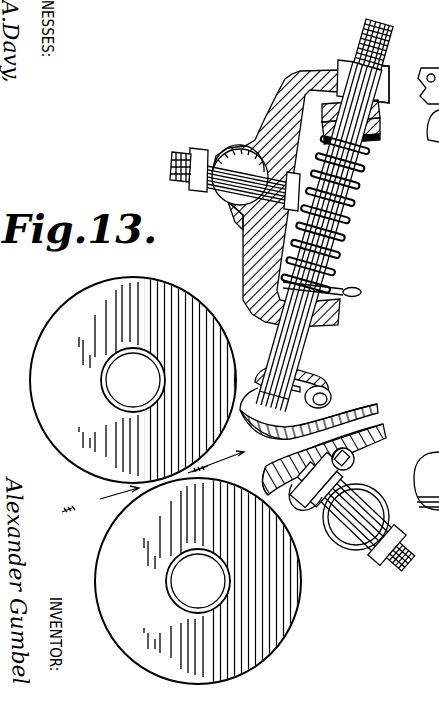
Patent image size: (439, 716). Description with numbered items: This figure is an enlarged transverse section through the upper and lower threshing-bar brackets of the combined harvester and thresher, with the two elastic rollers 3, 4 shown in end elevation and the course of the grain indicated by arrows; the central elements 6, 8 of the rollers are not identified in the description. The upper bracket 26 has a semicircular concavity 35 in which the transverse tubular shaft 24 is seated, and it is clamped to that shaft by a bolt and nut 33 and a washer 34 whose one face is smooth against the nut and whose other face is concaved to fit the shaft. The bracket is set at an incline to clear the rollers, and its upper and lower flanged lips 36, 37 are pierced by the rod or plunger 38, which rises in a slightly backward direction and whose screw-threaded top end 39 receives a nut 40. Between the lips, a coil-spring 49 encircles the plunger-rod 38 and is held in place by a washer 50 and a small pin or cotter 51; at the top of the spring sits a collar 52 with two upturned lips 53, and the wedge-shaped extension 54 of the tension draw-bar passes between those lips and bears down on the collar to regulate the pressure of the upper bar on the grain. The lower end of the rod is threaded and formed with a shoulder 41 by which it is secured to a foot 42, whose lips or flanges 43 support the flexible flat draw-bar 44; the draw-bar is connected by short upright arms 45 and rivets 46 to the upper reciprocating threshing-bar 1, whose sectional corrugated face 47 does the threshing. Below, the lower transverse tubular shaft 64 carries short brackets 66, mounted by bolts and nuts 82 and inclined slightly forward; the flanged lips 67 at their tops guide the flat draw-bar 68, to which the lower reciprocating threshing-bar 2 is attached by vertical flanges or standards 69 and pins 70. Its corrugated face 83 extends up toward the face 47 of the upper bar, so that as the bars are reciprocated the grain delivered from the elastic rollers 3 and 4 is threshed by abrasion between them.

The upper reciprocating threshing-bar 1 is at (316, 419).
The lower transverse reciprocating threshing-bar 2 is at (329, 457).
The elastic roller 3 is at (134, 380).
The elastic roller 4 is at (199, 581).
The hub of upper wheel 6 is at (158, 380).
The hub of lower wheel 8 is at (228, 578).
The transverse tubular shaft 24 is at (222, 198).
The bracket 26 is at (275, 198).
The bolt and nut 33 is at (197, 154).
The washer 34 is at (207, 152).
The semicircular concavity 35 is at (243, 224).
The upper flanged lip 36 is at (392, 98).
The lower flanged lip 37 is at (340, 313).
The rod or plunger 38 is at (318, 330).
The screw-threaded top end 39 is at (378, 31).
The nut 40 is at (346, 72).
The shoulder 41 is at (286, 368).
The foot 42 is at (310, 382).
The lips or flanges 43 is at (333, 396).
The flat draw-bar 44 is at (300, 372).
The short upright arms 45 is at (265, 384).
The rivets 46 is at (336, 412).
The corrugated bottom or face 47 is at (258, 429).
The coil-spring 49 is at (350, 241).
The washer 50 is at (348, 283).
The small pin or cotter 51 is at (362, 292).
The collar 52 is at (372, 142).
The upturned flanges or lips 53 is at (380, 130).
The wedge-shaped extension 54 is at (372, 124).
The lower transverse tubular shaft 64 is at (342, 538).
The short bracket 66 is at (358, 460).
The flanged lips 67 is at (308, 514).
The flat draw-bar 68 is at (352, 470).
The vertical flanges or standards 69 is at (370, 447).
The pins 70 is at (332, 453).
The bolts and nuts 82 is at (385, 552).
The corrugated face 83 is at (266, 476).